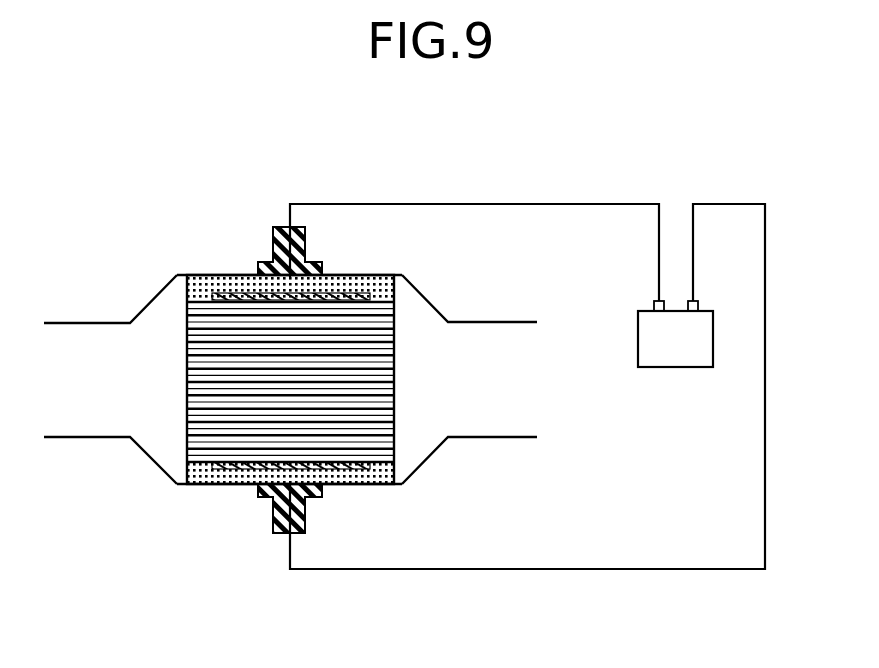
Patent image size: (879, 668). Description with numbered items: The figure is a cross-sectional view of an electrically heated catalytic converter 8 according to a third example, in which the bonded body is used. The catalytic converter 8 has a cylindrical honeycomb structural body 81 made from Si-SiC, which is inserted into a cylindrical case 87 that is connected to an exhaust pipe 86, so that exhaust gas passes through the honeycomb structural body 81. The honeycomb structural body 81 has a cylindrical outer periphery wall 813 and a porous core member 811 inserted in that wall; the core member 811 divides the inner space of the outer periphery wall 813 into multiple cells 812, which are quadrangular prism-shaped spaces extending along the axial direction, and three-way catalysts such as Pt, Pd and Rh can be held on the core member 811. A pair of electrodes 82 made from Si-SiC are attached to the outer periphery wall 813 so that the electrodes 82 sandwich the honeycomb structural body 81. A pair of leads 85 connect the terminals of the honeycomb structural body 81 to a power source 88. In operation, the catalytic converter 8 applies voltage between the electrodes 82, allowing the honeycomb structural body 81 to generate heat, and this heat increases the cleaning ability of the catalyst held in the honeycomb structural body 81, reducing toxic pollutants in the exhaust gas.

The electrically heated catalytic converter 8 is at (452, 173).
The honeycomb structural body 81 is at (182, 382).
The core member 811 is at (203, 422).
The cells 812 is at (200, 340).
The outer periphery wall 813 is at (345, 484).
The electrodes 82 is at (240, 277).
The leads 85 is at (573, 204).
The exhaust pipe 86 is at (98, 322).
The case 87 is at (343, 277).
The power source 88 is at (683, 338).